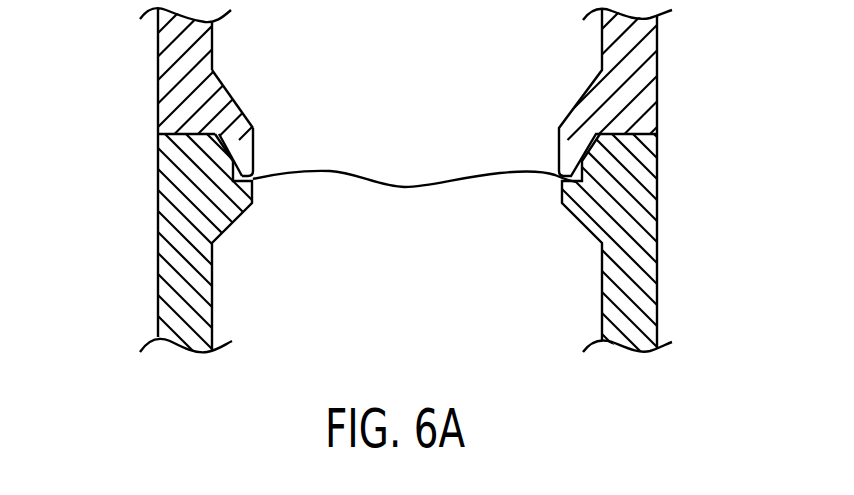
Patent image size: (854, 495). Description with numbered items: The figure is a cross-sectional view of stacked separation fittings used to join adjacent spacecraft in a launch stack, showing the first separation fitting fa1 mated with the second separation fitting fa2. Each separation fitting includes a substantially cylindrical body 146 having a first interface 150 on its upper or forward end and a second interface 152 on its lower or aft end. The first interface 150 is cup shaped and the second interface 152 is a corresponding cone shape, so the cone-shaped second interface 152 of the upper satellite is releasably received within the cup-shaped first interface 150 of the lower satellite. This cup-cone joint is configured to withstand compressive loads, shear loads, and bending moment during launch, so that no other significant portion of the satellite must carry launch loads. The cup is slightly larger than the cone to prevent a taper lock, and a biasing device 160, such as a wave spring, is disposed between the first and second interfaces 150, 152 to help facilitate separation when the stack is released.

The cylindrical body 146 is at (176, 73).
The first interface 150 is at (232, 158).
The second interface 152 is at (253, 129).
The biasing device 160 is at (290, 176).
The first separation fitting fa1 is at (658, 280).
The second separation fitting fa2 is at (658, 74).